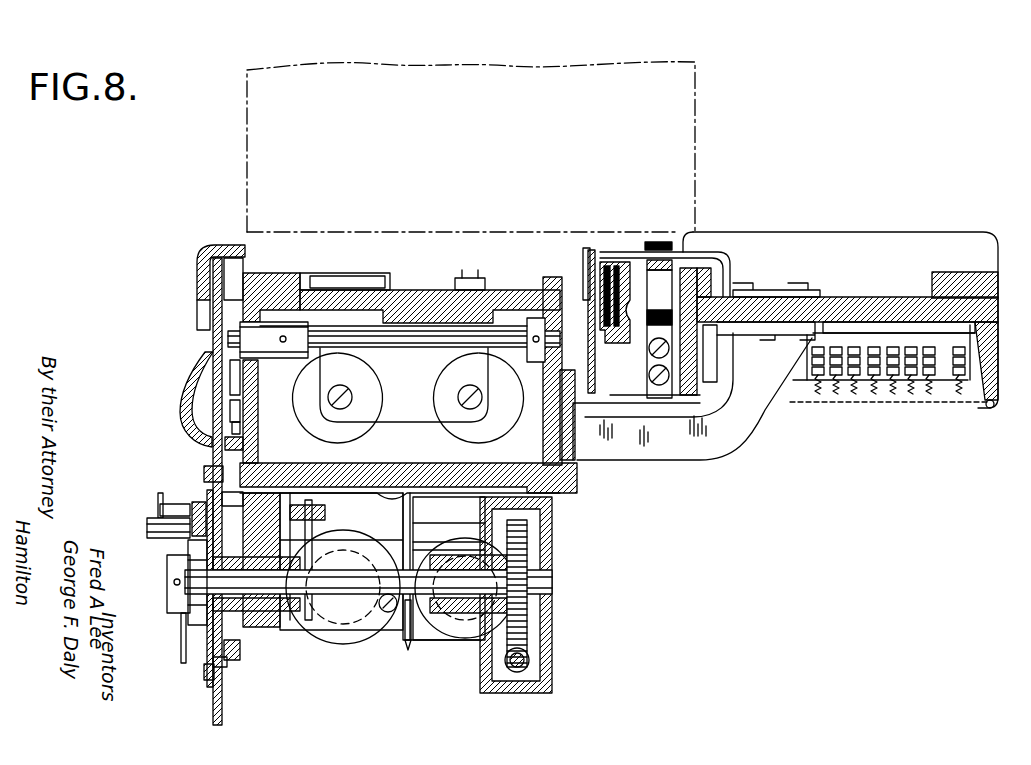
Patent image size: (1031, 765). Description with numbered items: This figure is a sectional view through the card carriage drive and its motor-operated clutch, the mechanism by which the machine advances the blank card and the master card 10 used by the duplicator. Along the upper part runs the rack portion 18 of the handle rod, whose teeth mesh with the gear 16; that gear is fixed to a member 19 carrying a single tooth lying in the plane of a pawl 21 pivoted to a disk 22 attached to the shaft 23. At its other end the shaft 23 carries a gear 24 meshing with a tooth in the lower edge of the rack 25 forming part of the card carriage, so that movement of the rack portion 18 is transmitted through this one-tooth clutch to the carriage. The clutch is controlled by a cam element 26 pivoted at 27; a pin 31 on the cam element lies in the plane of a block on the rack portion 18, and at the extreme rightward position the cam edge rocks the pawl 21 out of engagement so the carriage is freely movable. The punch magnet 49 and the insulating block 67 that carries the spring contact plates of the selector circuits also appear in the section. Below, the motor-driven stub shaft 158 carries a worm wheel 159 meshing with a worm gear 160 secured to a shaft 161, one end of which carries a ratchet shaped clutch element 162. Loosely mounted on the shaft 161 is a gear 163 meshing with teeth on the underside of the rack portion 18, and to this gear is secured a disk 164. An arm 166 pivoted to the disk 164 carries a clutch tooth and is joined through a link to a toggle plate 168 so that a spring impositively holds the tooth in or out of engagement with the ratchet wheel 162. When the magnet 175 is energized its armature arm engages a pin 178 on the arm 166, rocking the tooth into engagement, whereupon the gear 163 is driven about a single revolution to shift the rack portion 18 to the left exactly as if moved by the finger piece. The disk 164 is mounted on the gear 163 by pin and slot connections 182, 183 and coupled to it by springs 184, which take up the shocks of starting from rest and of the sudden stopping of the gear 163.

The master card 10 is at (858, 297).
The gear 16 is at (197, 291).
The rack portion 18 is at (212, 437).
The member 19 is at (243, 282).
The pawl 21 is at (245, 378).
The disk 22 is at (258, 306).
The shaft 23 is at (362, 345).
The gear 24 is at (593, 295).
The rack 25 is at (597, 262).
The cam element 26 is at (245, 410).
The pivot 27 is at (213, 476).
The pin 31 is at (264, 422).
The punch magnet 49 is at (455, 430).
The block 67 is at (945, 372).
The stub shaft 158 is at (514, 675).
The worm wheel 159 is at (528, 662).
The worm gear 160 is at (528, 553).
The shaft 161 is at (406, 646).
The ratchet shaped clutch element 162 is at (182, 570).
The gear 163 is at (213, 480).
The disk 164 is at (246, 441).
The arm 166 is at (165, 507).
The toggle plate 168 is at (181, 645).
The magnet 175 is at (352, 655).
The pin 178 is at (147, 527).
The pin and slot connection 182 is at (232, 668).
The pin and slot connection 183 is at (328, 554).
The springs 184 is at (241, 650).